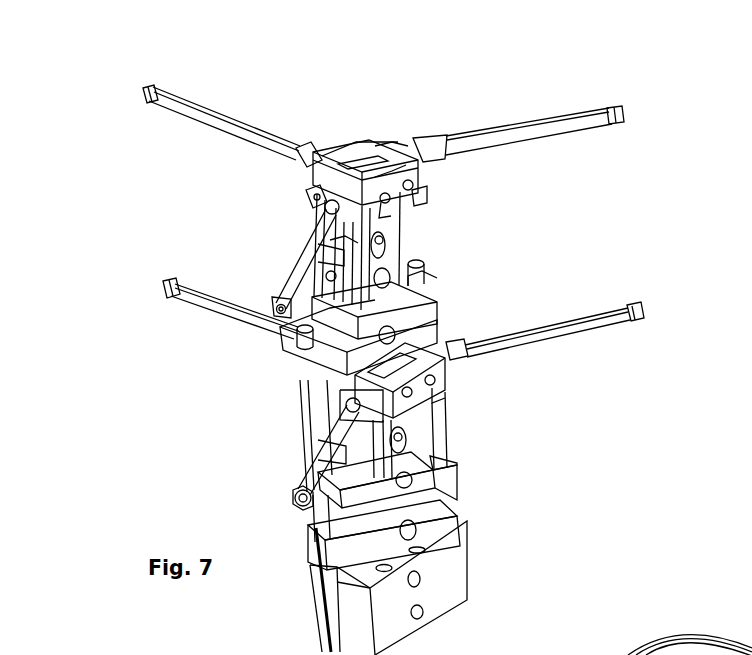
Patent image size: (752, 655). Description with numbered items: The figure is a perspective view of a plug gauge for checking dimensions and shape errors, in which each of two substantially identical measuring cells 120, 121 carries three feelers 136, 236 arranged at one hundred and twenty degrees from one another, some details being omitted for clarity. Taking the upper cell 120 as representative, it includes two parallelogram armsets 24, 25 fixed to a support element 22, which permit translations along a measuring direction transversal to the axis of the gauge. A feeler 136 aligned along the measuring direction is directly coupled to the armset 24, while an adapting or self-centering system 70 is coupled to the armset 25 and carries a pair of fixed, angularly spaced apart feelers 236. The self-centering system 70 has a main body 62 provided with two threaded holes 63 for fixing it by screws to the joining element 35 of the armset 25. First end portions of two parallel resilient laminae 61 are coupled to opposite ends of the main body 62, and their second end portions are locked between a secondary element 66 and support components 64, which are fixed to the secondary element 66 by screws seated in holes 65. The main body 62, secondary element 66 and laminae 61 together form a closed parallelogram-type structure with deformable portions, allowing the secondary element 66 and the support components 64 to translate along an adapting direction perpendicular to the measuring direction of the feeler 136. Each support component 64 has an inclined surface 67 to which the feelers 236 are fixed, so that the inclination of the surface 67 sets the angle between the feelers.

The feeler 136 is at (150, 87).
The feelers 236 is at (620, 108).
The measuring cell 120 is at (518, 217).
The measuring cell 121 is at (472, 405).
The secondary element 66 is at (368, 156).
The joining element 35 is at (352, 156).
The self-centering system 70 is at (390, 102).
The support components 64 is at (392, 162).
The resilient laminae 61 is at (396, 172).
The main body 62 is at (395, 173).
The threaded holes 63 is at (388, 204).
The holes 65 is at (307, 207).
The inclined surface 67 is at (350, 226).
The parallelogram armset 24 is at (280, 219).
The parallelogram armset 25 is at (437, 262).
The support element 22 is at (390, 310).